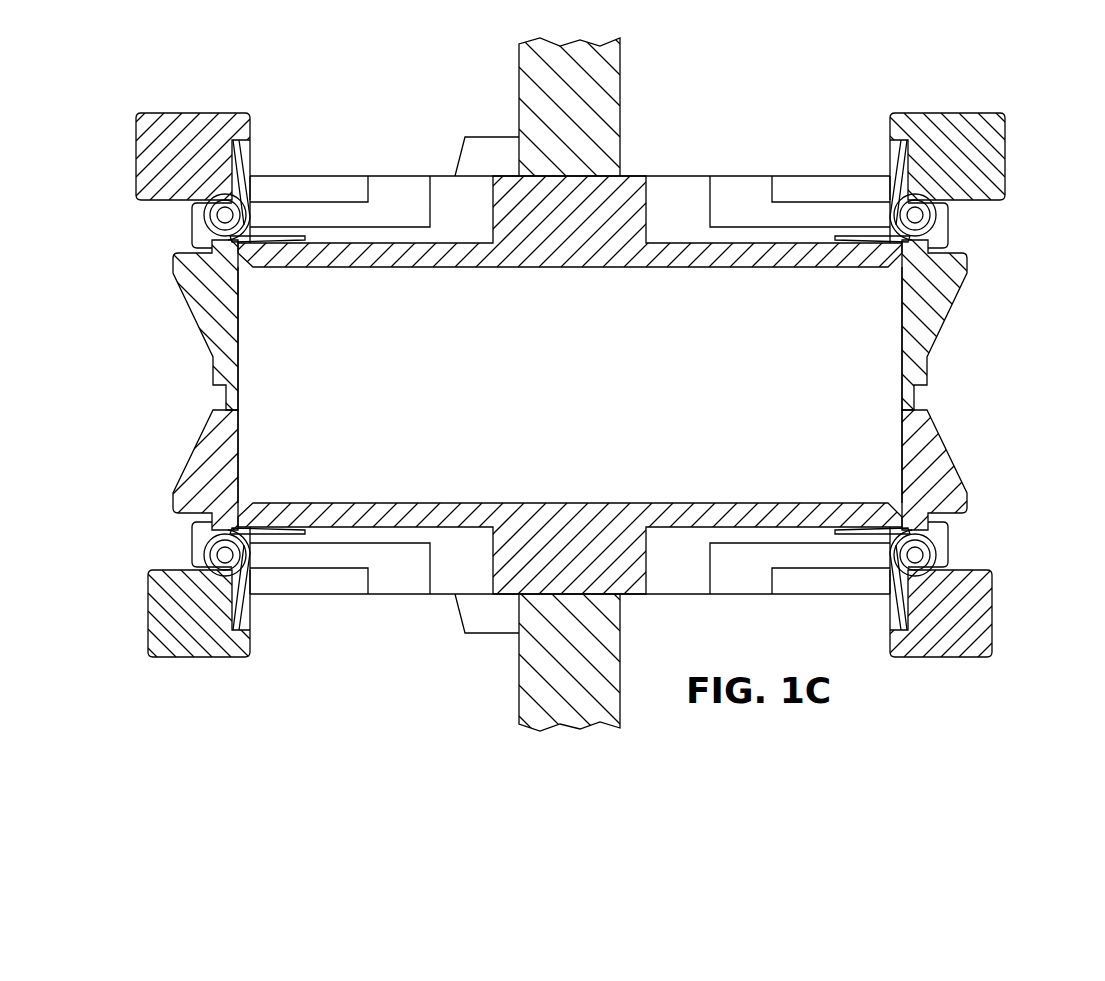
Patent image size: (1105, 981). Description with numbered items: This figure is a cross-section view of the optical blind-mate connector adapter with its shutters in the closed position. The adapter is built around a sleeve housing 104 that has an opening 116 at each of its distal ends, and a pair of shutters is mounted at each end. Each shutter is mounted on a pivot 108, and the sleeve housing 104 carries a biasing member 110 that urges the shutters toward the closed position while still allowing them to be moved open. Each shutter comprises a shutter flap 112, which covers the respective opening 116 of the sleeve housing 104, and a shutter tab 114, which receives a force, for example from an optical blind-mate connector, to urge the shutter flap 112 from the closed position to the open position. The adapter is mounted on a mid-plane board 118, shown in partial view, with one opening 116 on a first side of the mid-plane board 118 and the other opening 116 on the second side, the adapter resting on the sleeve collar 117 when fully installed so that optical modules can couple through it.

The sleeve housing 104 is at (394, 596).
The pivot 108 is at (915, 215).
The biasing member 110 is at (898, 158).
The shutter flap 112 is at (213, 383).
The shutter tab 114 is at (136, 158).
The opening 116 is at (238, 358).
The sleeve collar 117 is at (475, 149).
The mid-plane board 118 is at (519, 90).